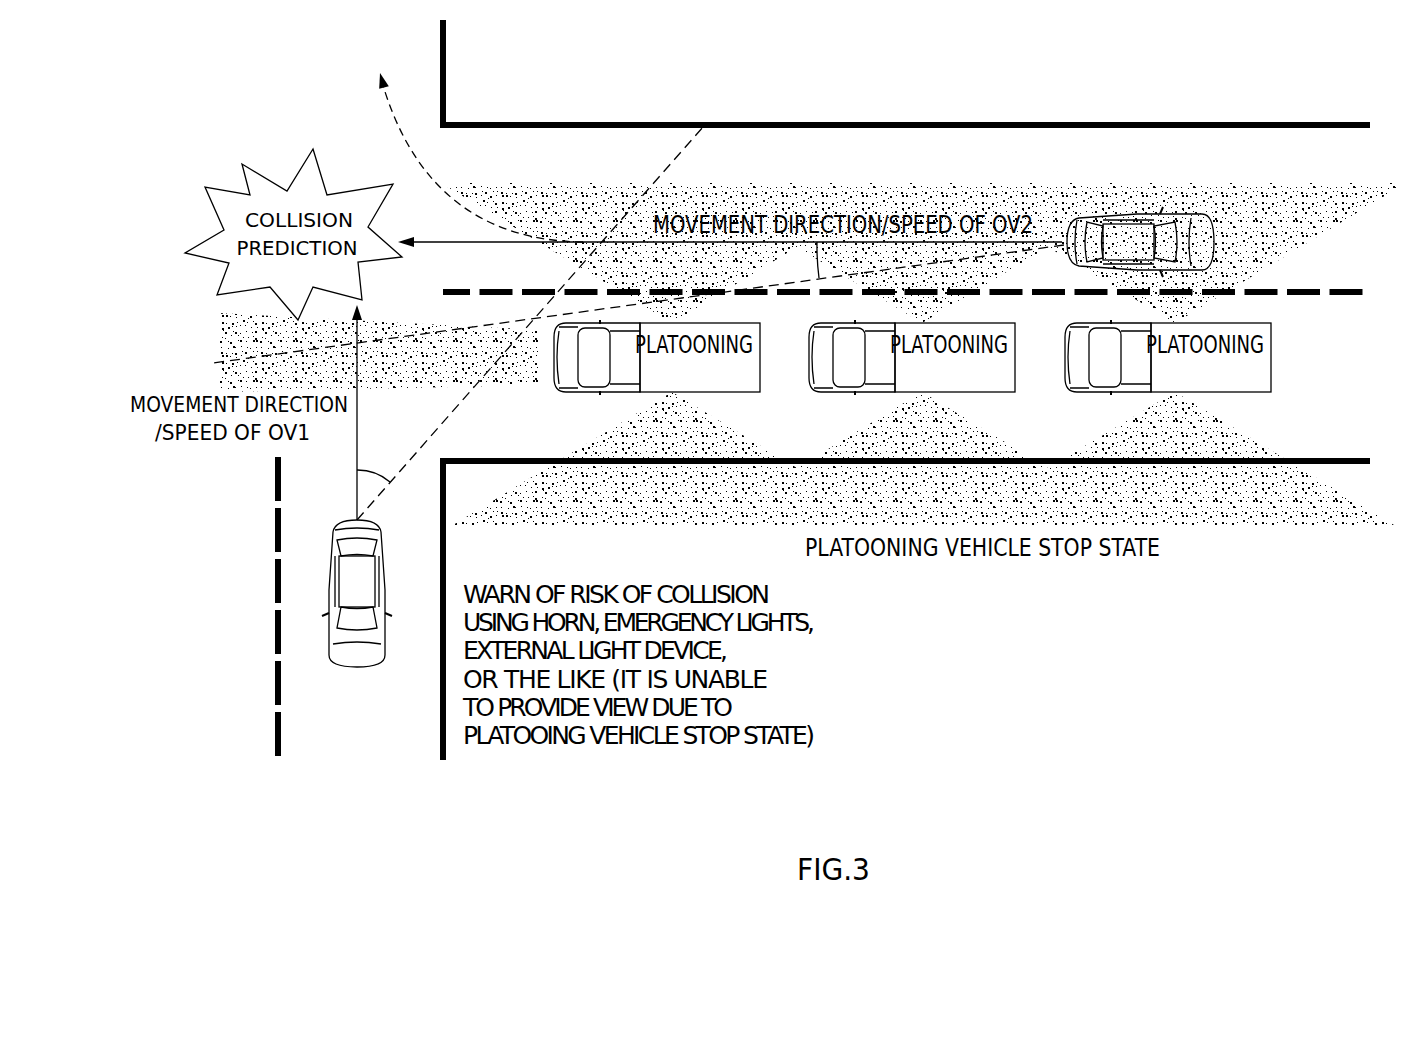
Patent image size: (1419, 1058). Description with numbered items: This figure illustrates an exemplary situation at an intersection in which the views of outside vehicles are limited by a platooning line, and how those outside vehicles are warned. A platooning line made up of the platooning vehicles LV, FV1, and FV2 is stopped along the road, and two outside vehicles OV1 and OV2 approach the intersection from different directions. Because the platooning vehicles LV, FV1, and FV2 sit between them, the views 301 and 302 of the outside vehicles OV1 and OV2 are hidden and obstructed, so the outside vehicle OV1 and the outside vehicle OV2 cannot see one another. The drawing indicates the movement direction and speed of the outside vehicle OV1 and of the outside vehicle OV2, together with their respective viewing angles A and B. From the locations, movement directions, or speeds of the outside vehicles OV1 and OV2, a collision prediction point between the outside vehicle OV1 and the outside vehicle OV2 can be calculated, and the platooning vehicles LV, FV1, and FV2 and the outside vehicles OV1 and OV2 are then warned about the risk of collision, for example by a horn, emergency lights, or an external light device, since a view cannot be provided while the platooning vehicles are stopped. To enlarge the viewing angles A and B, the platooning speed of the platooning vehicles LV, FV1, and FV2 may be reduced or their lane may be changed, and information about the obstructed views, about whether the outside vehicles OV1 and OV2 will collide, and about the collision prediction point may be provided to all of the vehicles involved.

The view 301 is at (672, 162).
The view 302 is at (959, 181).
The outside vehicle OV1 is at (357, 593).
The outside vehicle OV2 is at (1140, 242).
The platooning vehicle LV is at (657, 357).
The platooning vehicle FV1 is at (912, 357).
The platooning vehicle FV2 is at (1168, 357).
The viewing angle A is at (373, 463).
The viewing angle B is at (806, 260).